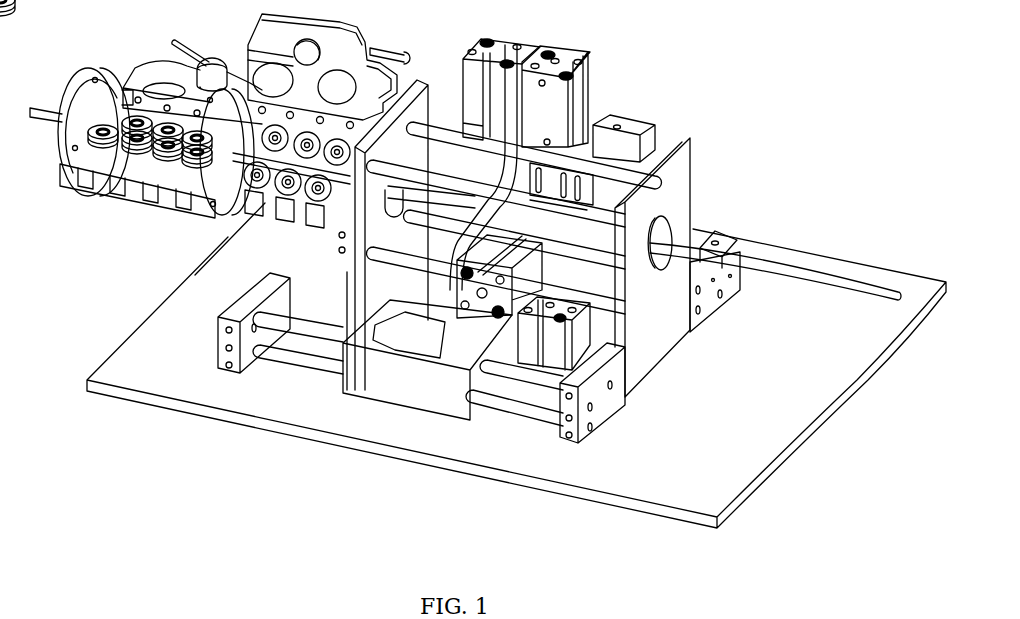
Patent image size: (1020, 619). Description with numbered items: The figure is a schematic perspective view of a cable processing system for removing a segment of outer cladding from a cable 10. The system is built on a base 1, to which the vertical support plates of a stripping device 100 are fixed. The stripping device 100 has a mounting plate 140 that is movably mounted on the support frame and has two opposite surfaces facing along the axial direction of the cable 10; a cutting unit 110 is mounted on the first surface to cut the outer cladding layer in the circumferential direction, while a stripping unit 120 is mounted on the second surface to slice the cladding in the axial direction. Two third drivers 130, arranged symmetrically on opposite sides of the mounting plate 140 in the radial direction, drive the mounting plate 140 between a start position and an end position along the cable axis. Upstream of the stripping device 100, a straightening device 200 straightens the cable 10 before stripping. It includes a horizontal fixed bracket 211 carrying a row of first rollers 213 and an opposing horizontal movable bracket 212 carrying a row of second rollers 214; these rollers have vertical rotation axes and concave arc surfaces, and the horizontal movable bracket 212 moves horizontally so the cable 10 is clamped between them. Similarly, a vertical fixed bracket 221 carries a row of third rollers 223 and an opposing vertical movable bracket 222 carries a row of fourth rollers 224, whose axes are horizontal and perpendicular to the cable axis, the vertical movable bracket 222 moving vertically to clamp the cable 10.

The base 1 is at (158, 376).
The cable 10 is at (46, 113).
The stripping device 100 is at (633, 109).
The cutting unit 110 is at (473, 71).
The stripping unit 120 is at (586, 88).
The third driver 130 is at (353, 365).
The mounting plate 140 is at (520, 65).
The straightening device 200 is at (214, 137).
The horizontal fixed bracket 211 is at (102, 183).
The horizontal movable bracket 212 is at (166, 73).
The first rollers 213 is at (72, 153).
The second rollers 214 is at (162, 127).
The vertical fixed bracket 221 is at (278, 208).
The vertical movable bracket 222 is at (356, 45).
The third rollers 223 is at (238, 187).
The fourth rollers 224 is at (280, 127).